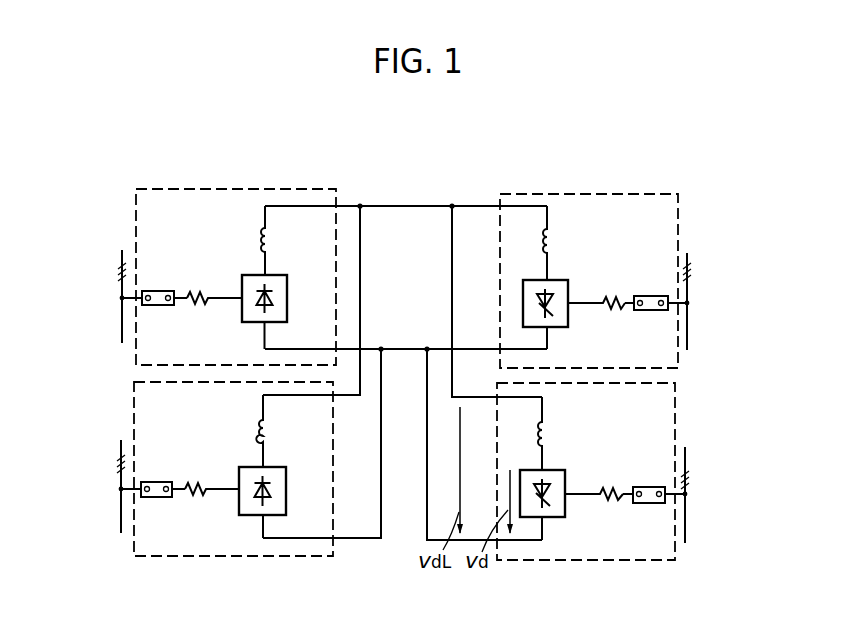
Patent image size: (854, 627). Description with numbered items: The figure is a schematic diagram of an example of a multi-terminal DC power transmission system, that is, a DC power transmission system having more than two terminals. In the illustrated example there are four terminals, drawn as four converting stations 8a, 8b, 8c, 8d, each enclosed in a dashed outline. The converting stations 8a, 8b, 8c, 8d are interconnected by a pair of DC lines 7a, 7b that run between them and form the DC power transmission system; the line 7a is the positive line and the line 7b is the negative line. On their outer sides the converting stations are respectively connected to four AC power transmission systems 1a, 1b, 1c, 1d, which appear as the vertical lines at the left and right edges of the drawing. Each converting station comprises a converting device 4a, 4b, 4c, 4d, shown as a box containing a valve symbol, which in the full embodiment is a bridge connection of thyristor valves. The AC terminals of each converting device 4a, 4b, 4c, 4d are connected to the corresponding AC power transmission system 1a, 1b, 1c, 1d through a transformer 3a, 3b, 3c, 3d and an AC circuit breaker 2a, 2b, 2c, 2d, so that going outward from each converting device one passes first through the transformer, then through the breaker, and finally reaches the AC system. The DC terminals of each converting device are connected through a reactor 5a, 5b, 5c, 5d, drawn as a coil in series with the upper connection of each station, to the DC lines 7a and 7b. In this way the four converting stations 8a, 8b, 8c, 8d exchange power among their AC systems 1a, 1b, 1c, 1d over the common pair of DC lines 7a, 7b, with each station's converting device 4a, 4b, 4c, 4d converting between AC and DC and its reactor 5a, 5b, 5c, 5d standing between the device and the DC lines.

The AC power transmission system 1a is at (120, 270).
The AC power transmission system 1b is at (115, 460).
The AC power transmission system 1c is at (693, 268).
The AC power transmission system 1d is at (690, 478).
The AC circuit breaker 2a is at (158, 291).
The AC circuit breaker 2b is at (158, 497).
The AC circuit breaker 2c is at (648, 296).
The AC circuit breaker 2d is at (647, 503).
The transformer 3a is at (198, 313).
The transformer 3b is at (193, 482).
The transformer 3c is at (608, 317).
The transformer 3d is at (607, 483).
The converting device 4a is at (273, 275).
The converting device 4b is at (283, 467).
The converting device 4c is at (570, 285).
The converting device 4d is at (523, 470).
The reactor 5a is at (268, 238).
The reactor 5b is at (260, 425).
The reactor 5c is at (550, 244).
The reactor 5d is at (547, 424).
The DC line 7a is at (407, 206).
The DC line 7b is at (398, 349).
The converting station 8a is at (215, 187).
The converting station 8b is at (247, 557).
The converting station 8c is at (590, 192).
The converting station 8d is at (572, 560).